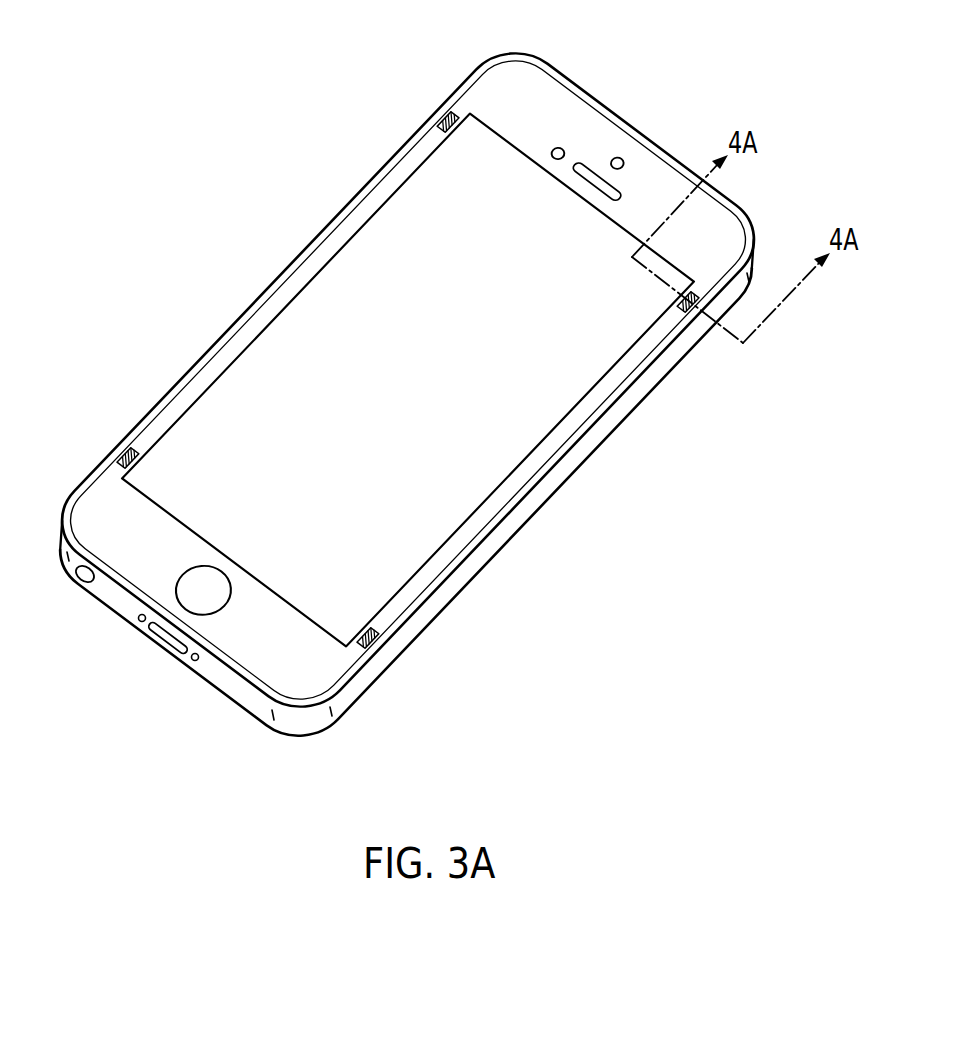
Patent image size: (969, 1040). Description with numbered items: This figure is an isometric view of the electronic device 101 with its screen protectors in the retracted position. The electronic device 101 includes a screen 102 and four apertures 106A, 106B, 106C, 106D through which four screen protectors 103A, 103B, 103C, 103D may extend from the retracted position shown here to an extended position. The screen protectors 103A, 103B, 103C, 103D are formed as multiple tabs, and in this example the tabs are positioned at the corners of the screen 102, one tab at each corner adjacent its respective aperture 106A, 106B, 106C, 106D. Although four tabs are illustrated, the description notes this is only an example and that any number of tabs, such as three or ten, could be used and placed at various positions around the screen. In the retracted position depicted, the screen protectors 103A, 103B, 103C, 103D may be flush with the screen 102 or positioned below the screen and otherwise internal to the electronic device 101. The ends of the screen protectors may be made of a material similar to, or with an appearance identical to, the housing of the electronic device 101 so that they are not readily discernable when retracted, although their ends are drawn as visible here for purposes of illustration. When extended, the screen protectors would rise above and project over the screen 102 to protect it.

The electronic device 101 is at (318, 722).
The screen 102 is at (512, 177).
The screen protector 103A is at (465, 108).
The screen protector 103B is at (137, 442).
The screen protector 103C is at (370, 628).
The screen protector 103D is at (691, 297).
The aperture 106A is at (443, 118).
The aperture 106B is at (125, 450).
The aperture 106C is at (357, 636).
The aperture 106D is at (679, 306).